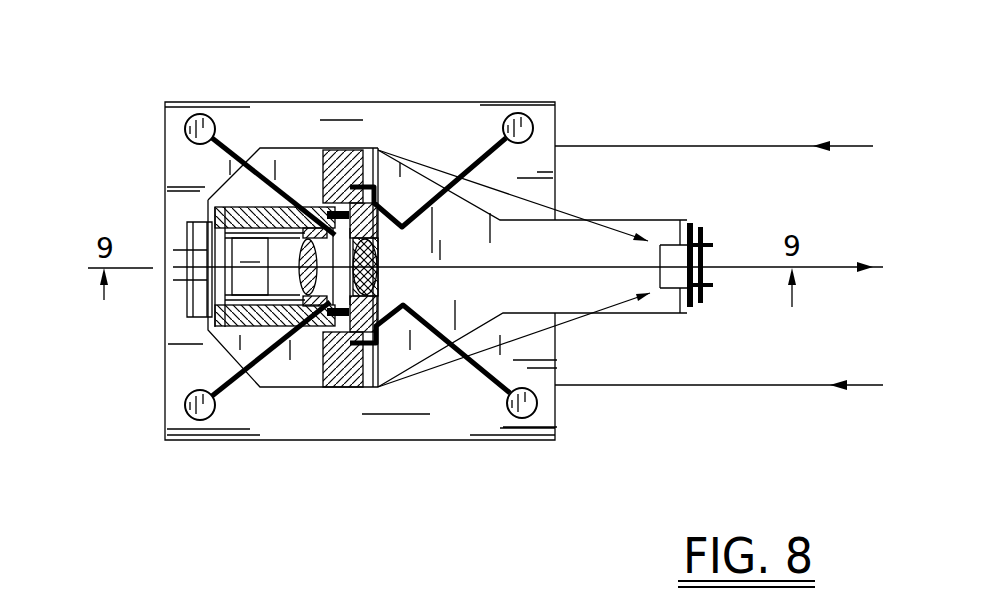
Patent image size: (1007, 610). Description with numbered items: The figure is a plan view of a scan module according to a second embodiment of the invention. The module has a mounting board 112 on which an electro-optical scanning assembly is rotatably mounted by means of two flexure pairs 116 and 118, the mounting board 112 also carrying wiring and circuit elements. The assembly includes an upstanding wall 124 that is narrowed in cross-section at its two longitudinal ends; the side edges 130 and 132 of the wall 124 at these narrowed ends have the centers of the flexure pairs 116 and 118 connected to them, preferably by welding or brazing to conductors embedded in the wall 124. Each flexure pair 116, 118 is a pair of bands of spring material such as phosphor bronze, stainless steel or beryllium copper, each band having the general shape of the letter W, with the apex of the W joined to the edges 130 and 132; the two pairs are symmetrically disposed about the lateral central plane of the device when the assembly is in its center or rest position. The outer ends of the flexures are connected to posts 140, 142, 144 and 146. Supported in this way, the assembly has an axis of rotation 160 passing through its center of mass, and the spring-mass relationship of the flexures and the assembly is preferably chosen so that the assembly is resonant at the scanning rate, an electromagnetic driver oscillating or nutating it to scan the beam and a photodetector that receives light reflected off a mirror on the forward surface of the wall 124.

The mounting board 112 is at (512, 441).
The flexure pair 116 is at (250, 146).
The flexure pair 118 is at (248, 388).
The upstanding wall 124 is at (343, 148).
The side edge 130 is at (372, 148).
The side edge 132 is at (363, 388).
The post 140 is at (533, 124).
The post 142 is at (202, 101).
The post 144 is at (537, 404).
The post 146 is at (186, 410).
The axis of rotation 160 is at (372, 278).